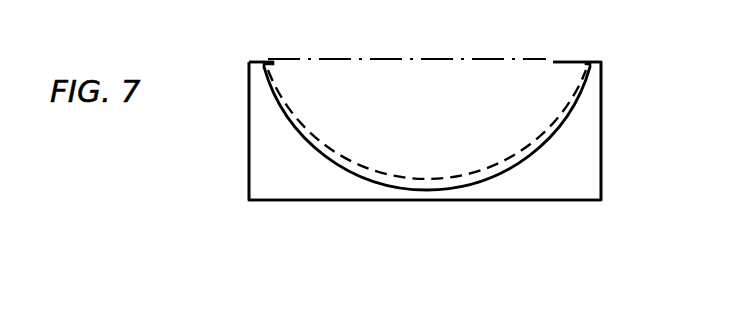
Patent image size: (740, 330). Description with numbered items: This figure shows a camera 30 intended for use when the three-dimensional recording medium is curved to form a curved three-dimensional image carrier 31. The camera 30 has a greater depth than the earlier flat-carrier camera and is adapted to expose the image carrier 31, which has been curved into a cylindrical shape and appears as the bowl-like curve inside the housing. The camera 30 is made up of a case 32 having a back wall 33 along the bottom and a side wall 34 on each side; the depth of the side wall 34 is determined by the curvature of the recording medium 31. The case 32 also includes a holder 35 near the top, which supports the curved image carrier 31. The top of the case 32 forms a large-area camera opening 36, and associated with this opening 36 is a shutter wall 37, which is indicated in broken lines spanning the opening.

The camera 30 is at (216, 175).
The 3D image carrier 31 is at (530, 143).
The case 32 is at (565, 202).
The back wall 33 is at (377, 200).
The side wall 34 is at (249, 108).
The holder 35 is at (265, 60).
The camera opening 36 is at (557, 70).
The shutter wall 37 is at (337, 57).